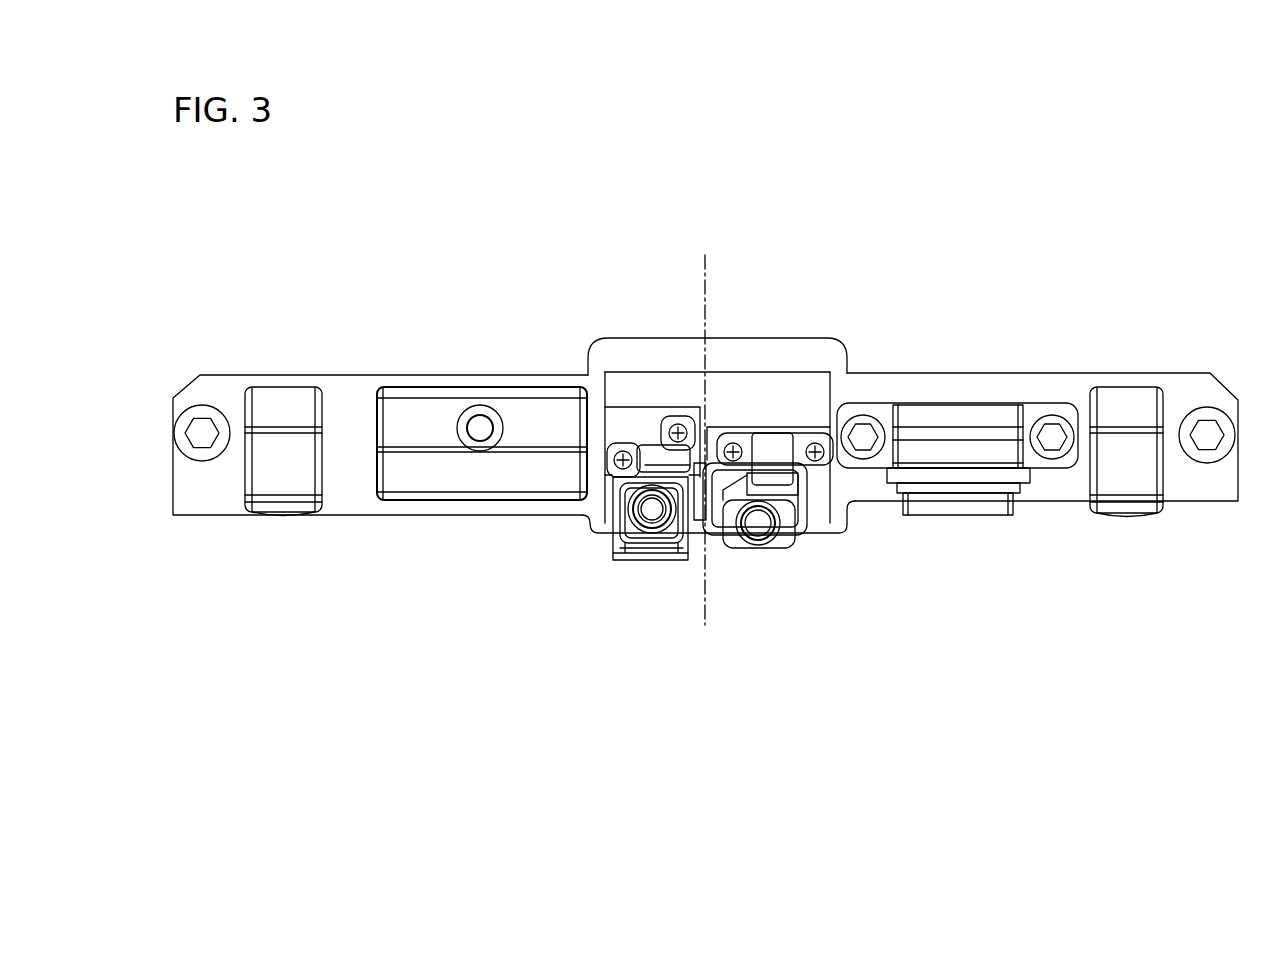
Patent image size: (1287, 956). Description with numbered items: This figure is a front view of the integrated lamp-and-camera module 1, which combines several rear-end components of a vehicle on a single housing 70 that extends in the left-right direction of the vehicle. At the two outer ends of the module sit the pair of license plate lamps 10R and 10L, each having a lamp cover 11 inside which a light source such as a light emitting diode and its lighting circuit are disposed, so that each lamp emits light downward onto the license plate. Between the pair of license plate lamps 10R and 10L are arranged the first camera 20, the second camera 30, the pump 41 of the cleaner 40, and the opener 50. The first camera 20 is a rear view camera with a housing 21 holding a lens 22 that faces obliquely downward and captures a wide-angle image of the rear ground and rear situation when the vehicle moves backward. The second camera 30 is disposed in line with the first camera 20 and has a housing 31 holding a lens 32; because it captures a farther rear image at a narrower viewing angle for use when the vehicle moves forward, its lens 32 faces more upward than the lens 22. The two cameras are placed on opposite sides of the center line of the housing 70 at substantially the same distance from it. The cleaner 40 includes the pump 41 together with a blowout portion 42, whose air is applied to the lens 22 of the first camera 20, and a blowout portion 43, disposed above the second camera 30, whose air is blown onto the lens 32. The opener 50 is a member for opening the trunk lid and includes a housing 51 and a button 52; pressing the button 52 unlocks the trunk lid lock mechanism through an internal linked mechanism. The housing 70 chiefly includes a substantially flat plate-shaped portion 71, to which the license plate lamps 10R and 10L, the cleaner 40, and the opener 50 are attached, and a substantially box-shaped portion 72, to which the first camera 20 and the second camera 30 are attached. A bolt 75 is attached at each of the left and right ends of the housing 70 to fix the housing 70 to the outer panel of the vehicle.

The integrated lamp-and-camera module 1 is at (1110, 241).
The license plate lamp 10L is at (242, 386).
The license plate lamp 10R is at (1158, 385).
The lamp cover 11 is at (282, 400).
The first camera 20 is at (798, 548).
The housing 21 is at (782, 540).
The lens 22 is at (757, 532).
The second camera 30 is at (609, 559).
The housing 31 is at (626, 555).
The lens 32 is at (655, 515).
The cleaner 40 is at (522, 384).
The pump 41 is at (433, 403).
The blowout portion 42 is at (762, 480).
The blowout portion 43 is at (648, 458).
The opener 50 is at (951, 401).
The housing 51 is at (1002, 415).
The button 52 is at (970, 498).
The housing 70 is at (851, 354).
The plate-shaped portion 71 is at (714, 350).
The box-shaped portion 72 is at (820, 385).
The bolt 75 is at (198, 452).